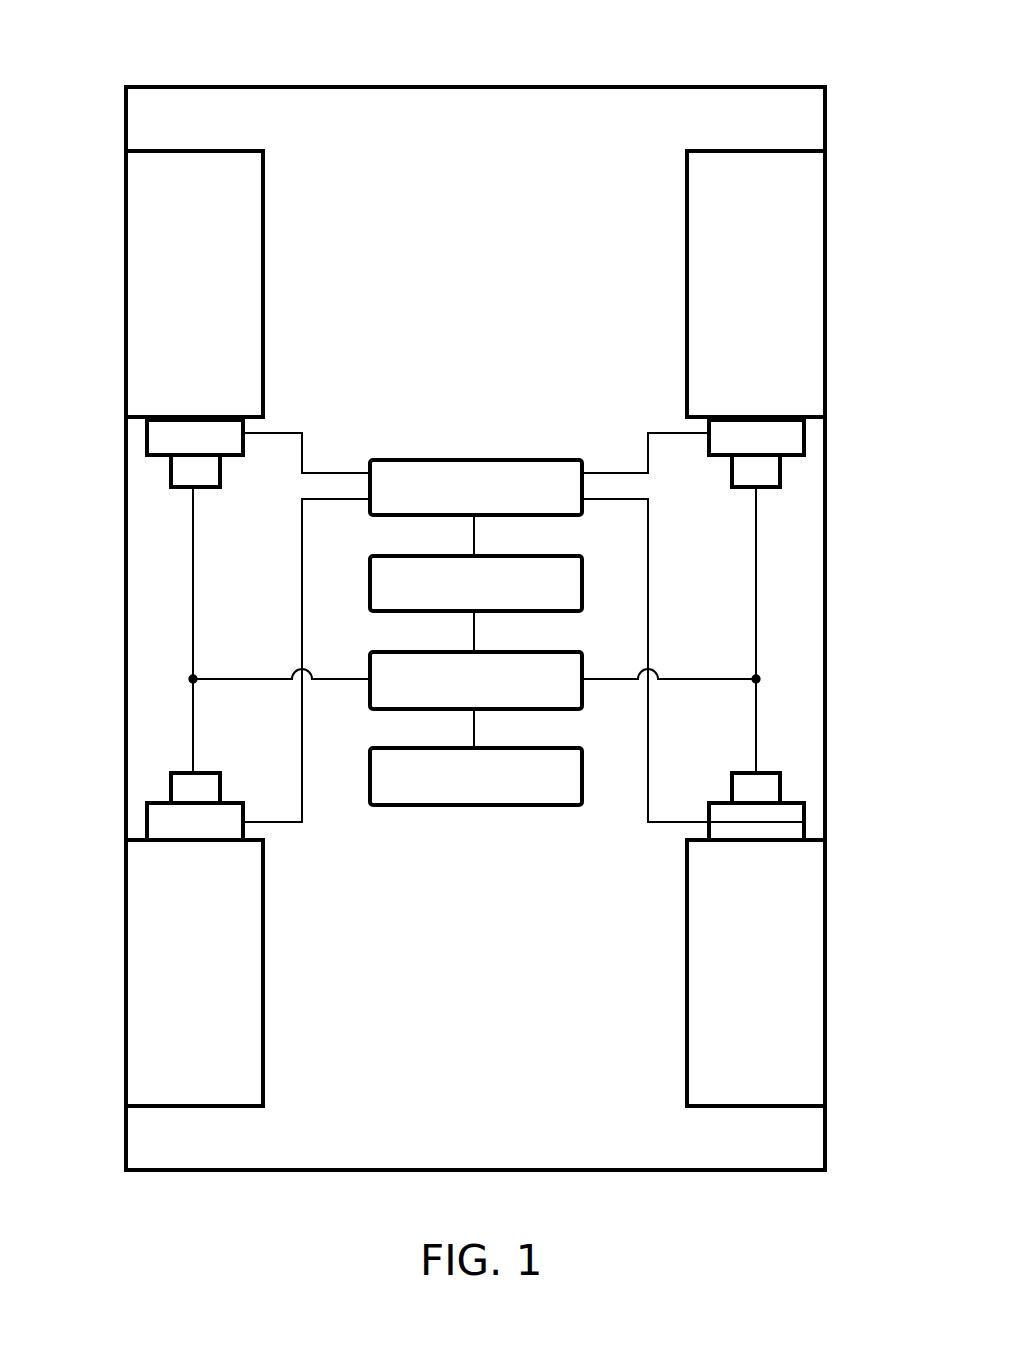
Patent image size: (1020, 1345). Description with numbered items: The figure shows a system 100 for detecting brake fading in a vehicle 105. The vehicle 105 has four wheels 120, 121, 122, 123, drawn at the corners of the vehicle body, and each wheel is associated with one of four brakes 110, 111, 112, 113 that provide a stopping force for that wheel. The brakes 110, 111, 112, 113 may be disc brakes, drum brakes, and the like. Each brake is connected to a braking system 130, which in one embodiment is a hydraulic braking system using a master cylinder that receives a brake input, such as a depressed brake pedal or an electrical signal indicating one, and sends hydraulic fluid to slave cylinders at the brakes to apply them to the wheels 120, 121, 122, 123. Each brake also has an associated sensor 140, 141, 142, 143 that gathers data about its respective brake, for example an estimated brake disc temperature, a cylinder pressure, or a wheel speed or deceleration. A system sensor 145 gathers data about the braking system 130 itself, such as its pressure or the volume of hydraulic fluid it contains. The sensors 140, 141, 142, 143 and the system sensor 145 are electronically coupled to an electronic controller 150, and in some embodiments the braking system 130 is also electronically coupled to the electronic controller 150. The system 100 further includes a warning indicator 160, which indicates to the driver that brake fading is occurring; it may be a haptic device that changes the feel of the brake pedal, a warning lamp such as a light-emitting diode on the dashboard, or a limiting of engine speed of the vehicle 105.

The system 100 is at (128, 52).
The vehicle 105 is at (473, 86).
The brake 110 is at (147, 436).
The brake 111 is at (806, 435).
The brake 112 is at (806, 822).
The brake 113 is at (147, 822).
The wheel 120 is at (125, 267).
The wheel 121 is at (827, 270).
The wheel 122 is at (827, 978).
The wheel 123 is at (125, 970).
The braking system 130 is at (473, 458).
The sensor 140 is at (171, 470).
The sensor 141 is at (782, 468).
The sensor 142 is at (782, 790).
The sensor 143 is at (171, 790).
The system sensor 145 is at (369, 580).
The electronic controller 150 is at (369, 664).
The warning indicator 160 is at (369, 778).